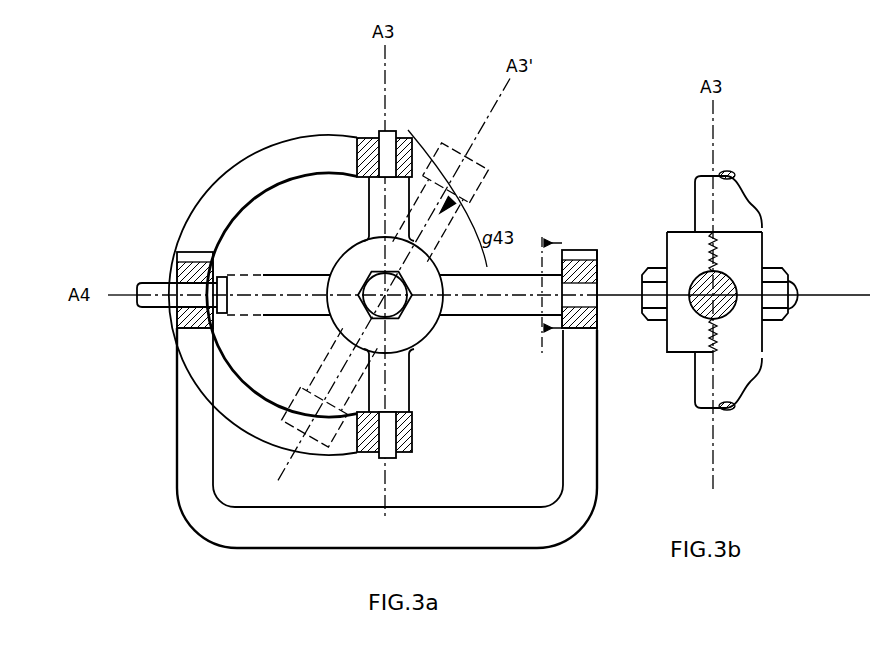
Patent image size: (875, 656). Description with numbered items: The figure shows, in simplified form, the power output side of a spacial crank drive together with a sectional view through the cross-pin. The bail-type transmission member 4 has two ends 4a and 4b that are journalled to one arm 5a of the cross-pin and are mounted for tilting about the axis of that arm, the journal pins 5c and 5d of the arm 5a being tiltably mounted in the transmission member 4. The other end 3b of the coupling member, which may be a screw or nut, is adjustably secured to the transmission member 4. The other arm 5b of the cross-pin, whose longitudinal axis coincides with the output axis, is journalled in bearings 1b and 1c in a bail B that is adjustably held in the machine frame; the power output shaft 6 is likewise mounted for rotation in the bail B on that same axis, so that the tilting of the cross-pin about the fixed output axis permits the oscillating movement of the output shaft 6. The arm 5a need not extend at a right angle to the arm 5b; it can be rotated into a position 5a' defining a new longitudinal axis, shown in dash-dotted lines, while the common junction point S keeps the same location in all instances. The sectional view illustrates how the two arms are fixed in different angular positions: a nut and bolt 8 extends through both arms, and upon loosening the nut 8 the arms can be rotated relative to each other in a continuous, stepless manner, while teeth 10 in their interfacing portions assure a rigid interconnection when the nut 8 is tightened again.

In FIG. 3a, the transmission member 4 is at (292, 183).
In FIG. 3a, the end of transmission member 4a is at (407, 437).
In FIG. 3a, the end of transmission member 4b is at (406, 139).
In FIG. 3a, the arm of cross-pin 5a is at (402, 294).
In FIG. 3b, the arm of cross-pin 5a is at (729, 189).
In FIG. 3a, the rotated position of arm 5a' is at (395, 295).
In FIG. 3a, the arm of cross-pin 5b is at (477, 308).
In FIG. 3b, the arm of cross-pin 5b is at (730, 310).
In FIG. 3a, the journal pin 5c is at (383, 138).
In FIG. 3a, the journal pin 5d is at (397, 445).
In FIG. 3a, the common junction point S is at (372, 280).
In FIG. 3b, the common junction point S is at (706, 289).
In FIG. 3a, the nut and bolt 8 is at (397, 307).
In FIG. 3b, the nut and bolt 8 is at (790, 299).
In FIG. 3a, the power output shaft 6 is at (185, 301).
In FIG. 3a, the bearing 1b is at (194, 262).
In FIG. 3a, the bearing 1c is at (597, 250).
In FIG. 3a, the end of coupling member 3b is at (569, 292).
In FIG. 3a, the bail B is at (207, 523).
In FIG. 3b, the teeth 10 is at (722, 235).